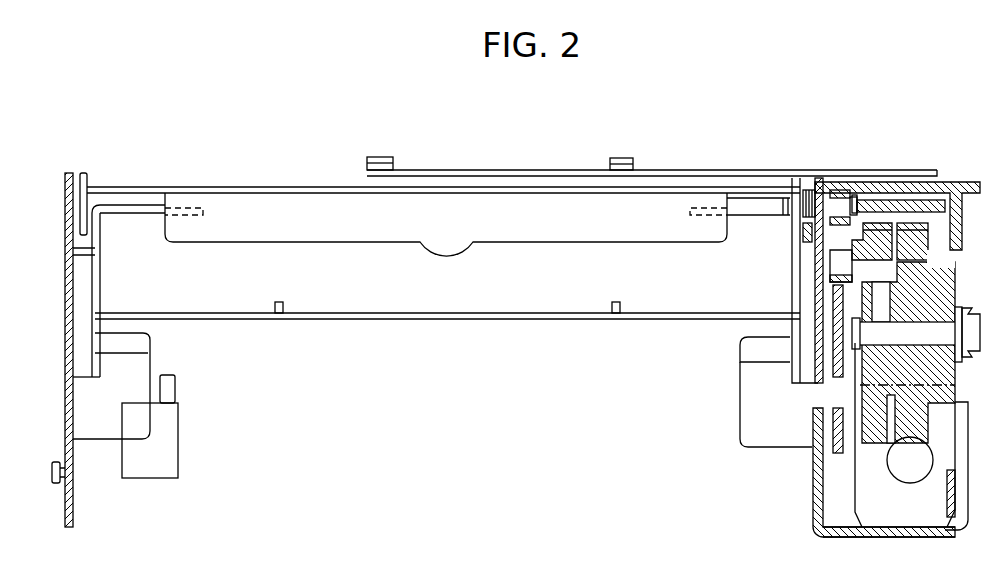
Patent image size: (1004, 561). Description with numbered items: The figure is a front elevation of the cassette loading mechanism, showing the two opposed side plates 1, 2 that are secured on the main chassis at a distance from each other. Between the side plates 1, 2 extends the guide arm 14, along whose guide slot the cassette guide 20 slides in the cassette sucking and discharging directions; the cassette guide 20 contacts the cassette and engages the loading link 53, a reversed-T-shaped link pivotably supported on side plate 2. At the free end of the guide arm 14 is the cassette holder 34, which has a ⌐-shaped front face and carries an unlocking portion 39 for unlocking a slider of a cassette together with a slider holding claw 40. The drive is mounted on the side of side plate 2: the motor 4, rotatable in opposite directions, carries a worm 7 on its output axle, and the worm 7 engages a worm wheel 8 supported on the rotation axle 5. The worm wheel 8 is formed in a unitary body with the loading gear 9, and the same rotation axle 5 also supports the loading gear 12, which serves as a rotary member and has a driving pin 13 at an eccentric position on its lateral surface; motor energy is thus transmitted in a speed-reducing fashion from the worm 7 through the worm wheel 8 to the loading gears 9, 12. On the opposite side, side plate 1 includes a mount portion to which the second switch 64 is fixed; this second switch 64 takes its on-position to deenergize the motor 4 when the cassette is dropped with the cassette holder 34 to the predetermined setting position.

The side plate 1 is at (65, 286).
The side plate 2 is at (813, 498).
The motor 4 is at (900, 520).
The rotation axle 5 is at (980, 338).
The worm 7 is at (922, 468).
The worm wheel 8 is at (917, 237).
The loading gear 9 is at (943, 290).
The loading gear 12 is at (873, 232).
The driving pin 13 is at (845, 263).
The guide arm 14 is at (245, 187).
The cassette guide 20 is at (262, 321).
The cassette holder 34 is at (750, 425).
The unlocking portion 39 is at (750, 350).
The slider holding claw 40 is at (283, 306).
The loading link 53 is at (675, 170).
The second switch 64 is at (168, 468).